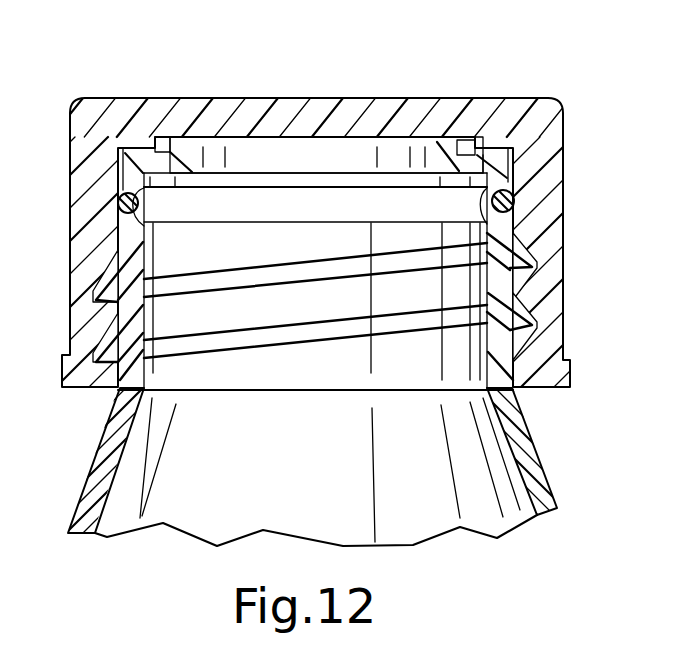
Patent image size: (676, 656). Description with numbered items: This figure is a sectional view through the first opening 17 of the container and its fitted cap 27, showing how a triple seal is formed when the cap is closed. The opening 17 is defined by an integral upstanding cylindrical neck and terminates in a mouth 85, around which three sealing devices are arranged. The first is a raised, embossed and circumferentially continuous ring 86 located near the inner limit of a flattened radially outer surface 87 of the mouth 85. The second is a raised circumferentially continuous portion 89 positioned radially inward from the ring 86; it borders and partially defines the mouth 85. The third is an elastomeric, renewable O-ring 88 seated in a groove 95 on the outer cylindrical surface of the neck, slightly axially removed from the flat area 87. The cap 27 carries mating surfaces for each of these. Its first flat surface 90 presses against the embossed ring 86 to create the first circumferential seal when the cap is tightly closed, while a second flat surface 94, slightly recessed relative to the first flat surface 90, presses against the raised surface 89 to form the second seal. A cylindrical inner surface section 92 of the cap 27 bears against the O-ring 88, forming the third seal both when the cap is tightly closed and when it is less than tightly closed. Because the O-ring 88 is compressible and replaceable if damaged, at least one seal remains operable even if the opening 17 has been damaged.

The first opening 17 is at (537, 441).
The fitted cap 27 is at (542, 112).
The mouth 85 is at (331, 250).
The ring 86 is at (478, 146).
The flattened radially outer surface 87 is at (133, 160).
The O-ring 88 is at (550, 223).
The raised circumferentially continuous portion 89 is at (188, 147).
The first flat surface 90 is at (500, 146).
The cylindrical inner surface section 92 is at (515, 172).
The second flat surface 94 is at (168, 157).
The groove 95 is at (512, 210).